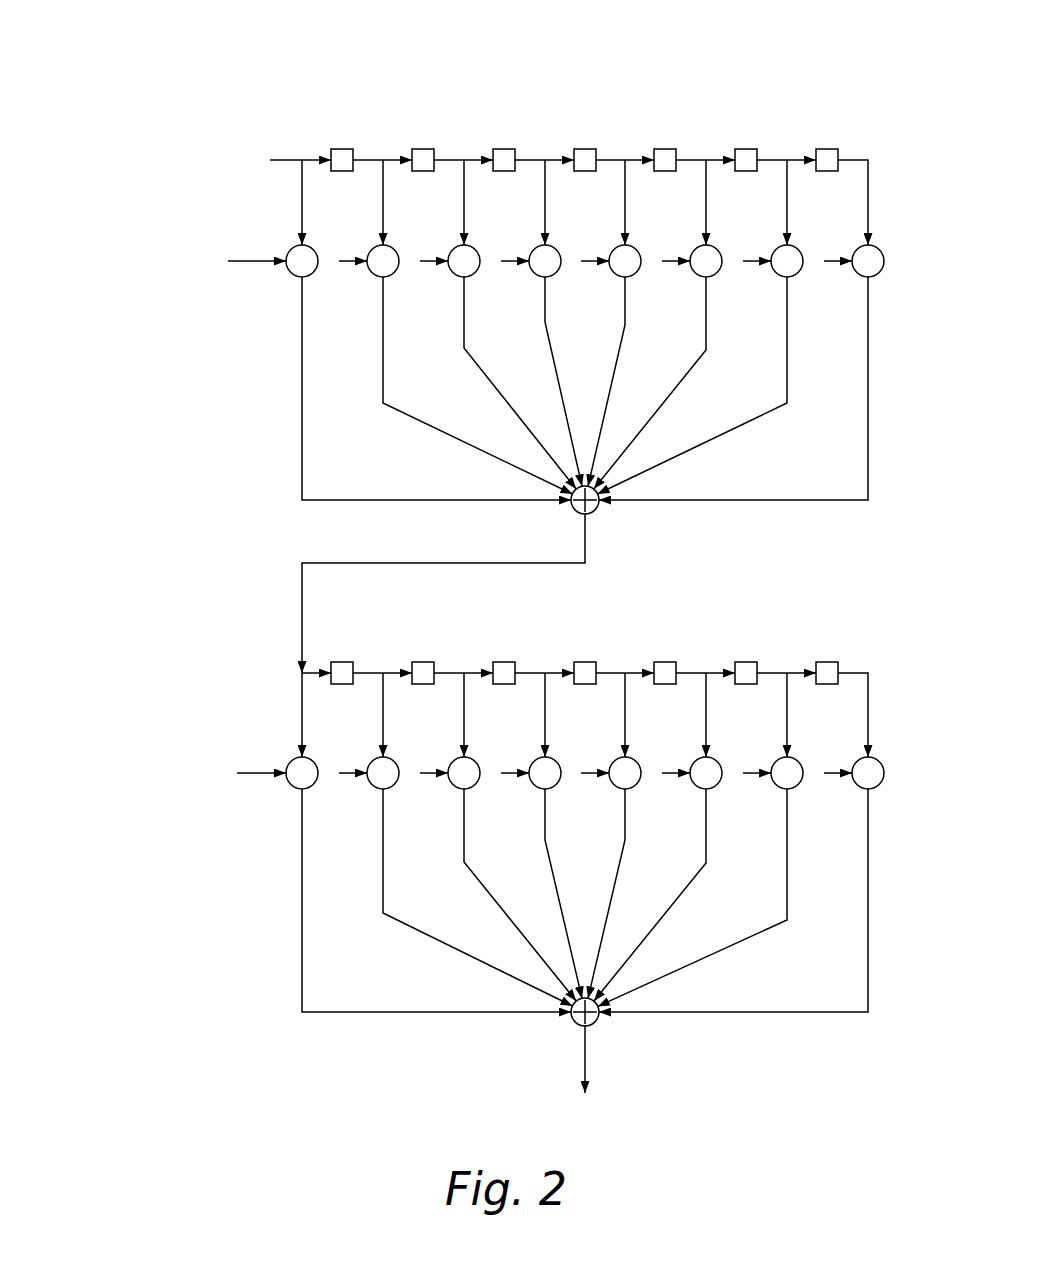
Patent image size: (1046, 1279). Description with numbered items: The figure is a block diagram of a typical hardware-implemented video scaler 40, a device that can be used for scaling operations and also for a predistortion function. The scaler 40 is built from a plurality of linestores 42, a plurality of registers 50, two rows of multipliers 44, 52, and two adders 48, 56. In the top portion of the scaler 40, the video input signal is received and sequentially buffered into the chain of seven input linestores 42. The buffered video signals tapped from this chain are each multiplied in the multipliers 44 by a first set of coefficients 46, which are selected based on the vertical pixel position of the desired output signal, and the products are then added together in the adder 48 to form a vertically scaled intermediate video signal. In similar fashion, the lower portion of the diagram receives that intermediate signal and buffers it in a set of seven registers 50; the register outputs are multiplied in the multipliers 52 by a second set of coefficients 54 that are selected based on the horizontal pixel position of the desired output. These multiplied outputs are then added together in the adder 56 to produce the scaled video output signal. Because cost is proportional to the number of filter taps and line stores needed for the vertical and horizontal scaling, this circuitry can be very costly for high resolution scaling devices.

The video scaler 40 is at (758, 72).
The linestores 42 is at (343, 149).
The multipliers 44 is at (312, 273).
The first set of coefficients 46 is at (133, 310).
The adder 48 is at (595, 511).
The registers 50 is at (344, 662).
The multipliers 52 is at (313, 786).
The second set of coefficients 54 is at (133, 830).
The adder 56 is at (595, 1026).